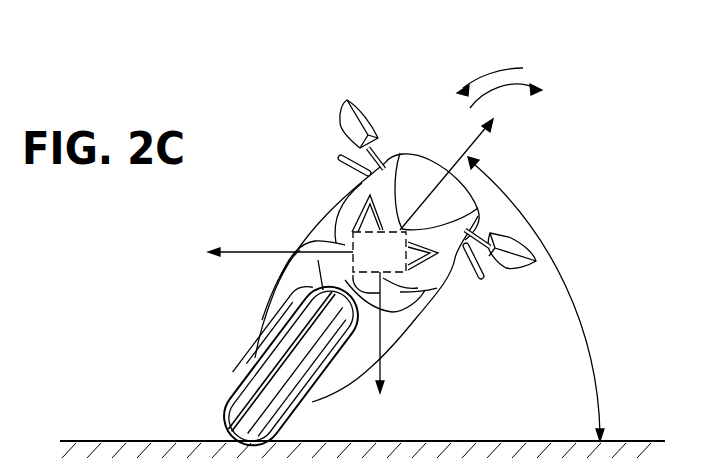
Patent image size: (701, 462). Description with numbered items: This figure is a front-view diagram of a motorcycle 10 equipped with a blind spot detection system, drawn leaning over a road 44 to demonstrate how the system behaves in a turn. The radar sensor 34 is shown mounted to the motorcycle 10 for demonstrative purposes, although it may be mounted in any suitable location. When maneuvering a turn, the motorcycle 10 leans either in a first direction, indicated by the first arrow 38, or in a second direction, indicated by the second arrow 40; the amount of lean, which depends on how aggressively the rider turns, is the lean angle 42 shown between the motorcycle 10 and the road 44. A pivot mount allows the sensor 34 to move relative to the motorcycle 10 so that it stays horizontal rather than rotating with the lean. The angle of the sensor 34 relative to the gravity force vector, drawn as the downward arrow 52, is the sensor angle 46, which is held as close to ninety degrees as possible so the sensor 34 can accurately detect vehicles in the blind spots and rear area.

The motorcycle 10 is at (418, 112).
The radar sensor 34 is at (328, 240).
The first arrow 38 is at (517, 90).
The second arrow 40 is at (486, 71).
The lean angle 42 is at (593, 380).
The road 44 is at (90, 440).
The sensor angle 46 is at (300, 283).
The gravity force vector 52 is at (381, 376).